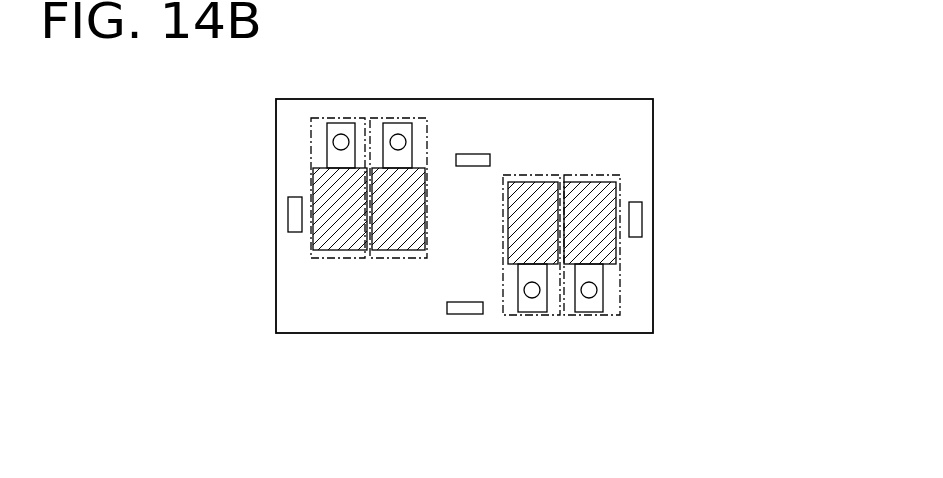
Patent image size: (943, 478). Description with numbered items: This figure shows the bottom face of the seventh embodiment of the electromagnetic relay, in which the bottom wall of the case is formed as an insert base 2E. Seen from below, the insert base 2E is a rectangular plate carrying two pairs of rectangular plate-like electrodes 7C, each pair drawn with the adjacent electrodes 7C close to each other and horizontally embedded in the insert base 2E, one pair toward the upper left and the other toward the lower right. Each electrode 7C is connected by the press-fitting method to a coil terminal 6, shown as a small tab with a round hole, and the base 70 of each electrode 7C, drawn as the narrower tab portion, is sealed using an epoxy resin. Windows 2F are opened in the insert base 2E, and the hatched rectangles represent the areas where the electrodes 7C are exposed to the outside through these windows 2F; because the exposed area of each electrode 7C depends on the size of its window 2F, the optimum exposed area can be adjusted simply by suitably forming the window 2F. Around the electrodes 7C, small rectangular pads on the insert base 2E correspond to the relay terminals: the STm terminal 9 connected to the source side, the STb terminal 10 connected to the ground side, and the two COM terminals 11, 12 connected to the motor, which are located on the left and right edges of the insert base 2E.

The insert base 2E is at (635, 115).
The window 2F is at (607, 203).
The electrode 7C is at (530, 195).
The base of electrode 70 is at (332, 155).
The coil terminal 6 is at (344, 127).
The STm terminal 9 is at (475, 154).
The STb terminal 10 is at (458, 314).
The COM terminal 11 is at (643, 212).
The COM terminal 12 is at (288, 213).